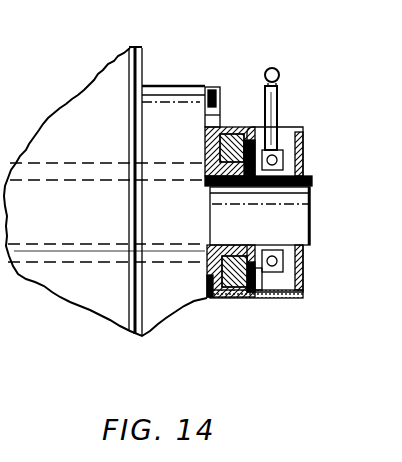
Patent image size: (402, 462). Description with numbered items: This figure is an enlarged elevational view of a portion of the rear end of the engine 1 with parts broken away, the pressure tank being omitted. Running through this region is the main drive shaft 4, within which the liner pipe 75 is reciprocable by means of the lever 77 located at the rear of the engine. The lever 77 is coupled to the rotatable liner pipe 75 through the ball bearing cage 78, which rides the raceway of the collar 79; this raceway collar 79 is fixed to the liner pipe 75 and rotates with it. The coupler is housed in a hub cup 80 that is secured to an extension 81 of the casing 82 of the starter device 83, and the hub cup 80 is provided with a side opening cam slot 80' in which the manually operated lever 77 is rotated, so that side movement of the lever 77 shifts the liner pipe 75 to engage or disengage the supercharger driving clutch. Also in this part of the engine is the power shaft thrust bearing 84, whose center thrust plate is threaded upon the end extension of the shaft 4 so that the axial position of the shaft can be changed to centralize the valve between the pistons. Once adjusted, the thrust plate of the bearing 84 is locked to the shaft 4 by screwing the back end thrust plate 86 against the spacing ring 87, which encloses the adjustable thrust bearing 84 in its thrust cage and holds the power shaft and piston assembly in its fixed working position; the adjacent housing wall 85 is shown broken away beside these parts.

The vehicle body 1 is at (100, 98).
The main drive shaft 4 is at (223, 232).
The liner pipe 75 is at (276, 237).
The lever 77 is at (281, 72).
The ball bearing cage 78 is at (296, 131).
The collar 79 is at (297, 153).
The hub cup 80 is at (269, 307).
The cam slot 80' is at (296, 116).
The extension 81 is at (237, 128).
The casing 82 is at (205, 88).
The starter device 83 is at (159, 73).
The power shaft thrust bearing 84 is at (208, 307).
The housing wall 85 is at (212, 284).
The back end thrust plate 86 is at (238, 297).
The spacing ring 87 is at (255, 275).